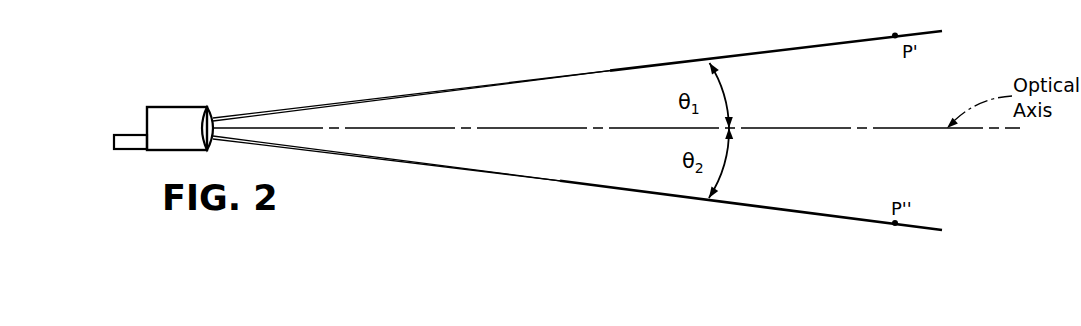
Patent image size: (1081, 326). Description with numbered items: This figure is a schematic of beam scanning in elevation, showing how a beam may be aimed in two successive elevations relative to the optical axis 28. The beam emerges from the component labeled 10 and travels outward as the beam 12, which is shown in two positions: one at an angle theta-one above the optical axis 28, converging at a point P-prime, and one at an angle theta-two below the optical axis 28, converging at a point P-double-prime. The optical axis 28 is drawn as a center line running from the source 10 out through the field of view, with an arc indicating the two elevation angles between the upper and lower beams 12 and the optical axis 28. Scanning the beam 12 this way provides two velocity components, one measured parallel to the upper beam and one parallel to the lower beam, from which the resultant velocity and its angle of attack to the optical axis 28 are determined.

The light source 10 is at (183, 107).
The light beam 12 is at (542, 75).
The optical axis 28 is at (482, 128).